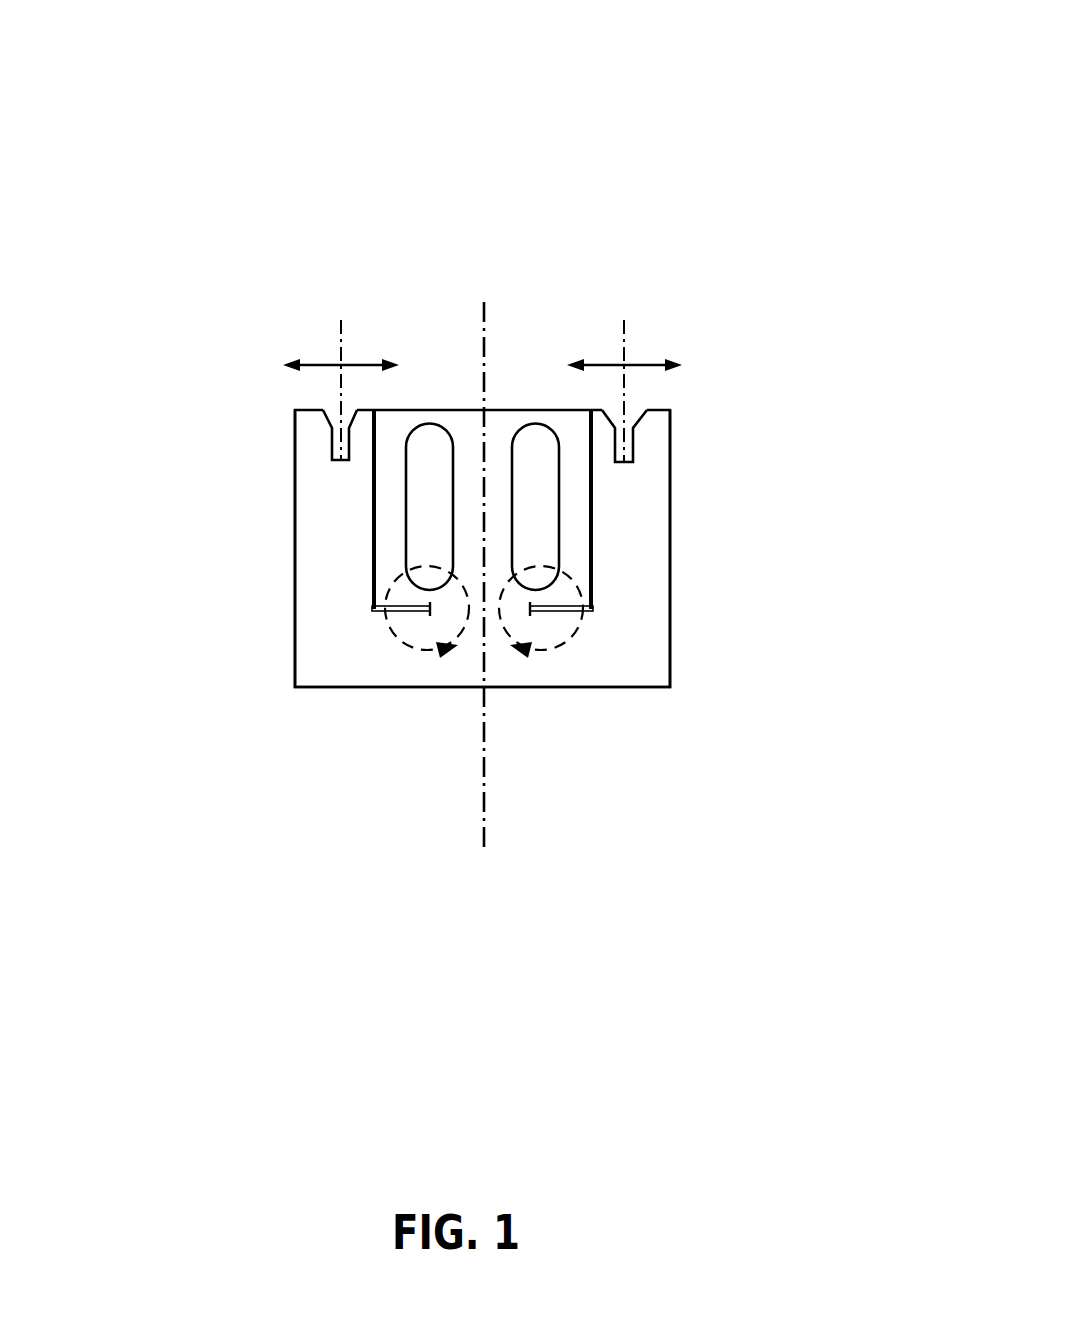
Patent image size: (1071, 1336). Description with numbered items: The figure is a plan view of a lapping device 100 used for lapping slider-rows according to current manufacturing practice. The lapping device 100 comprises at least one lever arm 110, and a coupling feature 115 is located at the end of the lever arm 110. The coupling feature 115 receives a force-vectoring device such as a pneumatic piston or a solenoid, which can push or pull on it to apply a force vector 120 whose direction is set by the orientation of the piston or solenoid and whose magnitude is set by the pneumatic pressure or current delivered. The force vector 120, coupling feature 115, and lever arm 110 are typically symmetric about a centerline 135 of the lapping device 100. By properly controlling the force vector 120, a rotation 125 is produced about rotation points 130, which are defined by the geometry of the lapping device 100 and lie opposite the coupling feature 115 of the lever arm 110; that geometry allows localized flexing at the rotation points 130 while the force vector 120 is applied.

The lapping device 100 is at (336, 184).
The lever arm 110 is at (313, 487).
The coupling feature 115 is at (325, 438).
The force vector 120 is at (351, 362).
The rotation 125 is at (447, 570).
The rotation points 130 is at (523, 621).
The centerline 135 is at (488, 788).